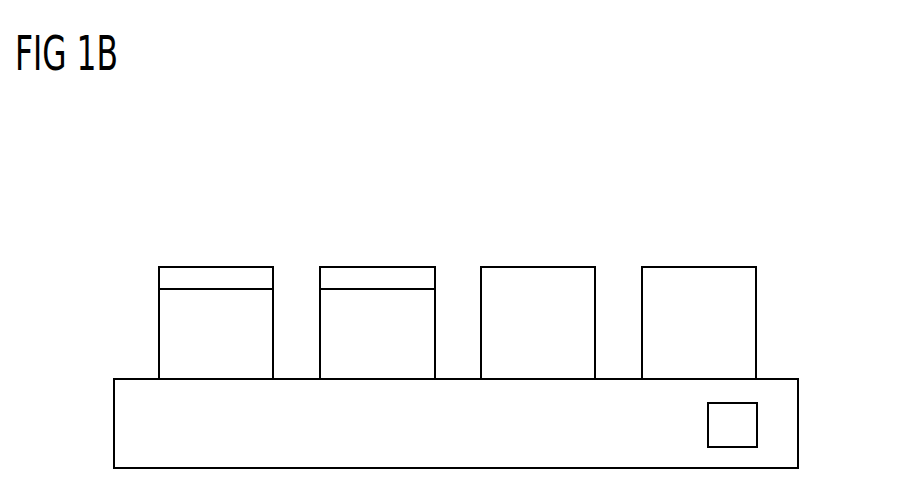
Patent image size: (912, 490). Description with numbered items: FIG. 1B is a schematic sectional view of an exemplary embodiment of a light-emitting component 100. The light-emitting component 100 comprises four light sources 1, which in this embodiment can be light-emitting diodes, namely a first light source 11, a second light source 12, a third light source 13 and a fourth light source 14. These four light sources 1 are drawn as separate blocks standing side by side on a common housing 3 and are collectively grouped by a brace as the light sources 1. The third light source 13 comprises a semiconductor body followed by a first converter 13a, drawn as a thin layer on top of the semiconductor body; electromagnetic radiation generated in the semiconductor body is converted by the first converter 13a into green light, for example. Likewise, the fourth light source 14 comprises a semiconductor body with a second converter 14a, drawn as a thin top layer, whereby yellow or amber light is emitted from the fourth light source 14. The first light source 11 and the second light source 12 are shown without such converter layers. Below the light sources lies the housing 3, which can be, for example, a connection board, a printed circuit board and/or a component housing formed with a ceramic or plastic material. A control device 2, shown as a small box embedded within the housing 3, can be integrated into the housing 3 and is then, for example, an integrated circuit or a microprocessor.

The light-emitting component 100 is at (713, 148).
The light sources 1 is at (698, 205).
The first light source 11 is at (680, 277).
The second light source 12 is at (518, 277).
The third light source 13 is at (413, 300).
The first converter 13a is at (358, 278).
The fourth light source 14 is at (228, 302).
The second converter 14a is at (167, 275).
The control device 2 is at (747, 426).
The housing 3 is at (785, 401).